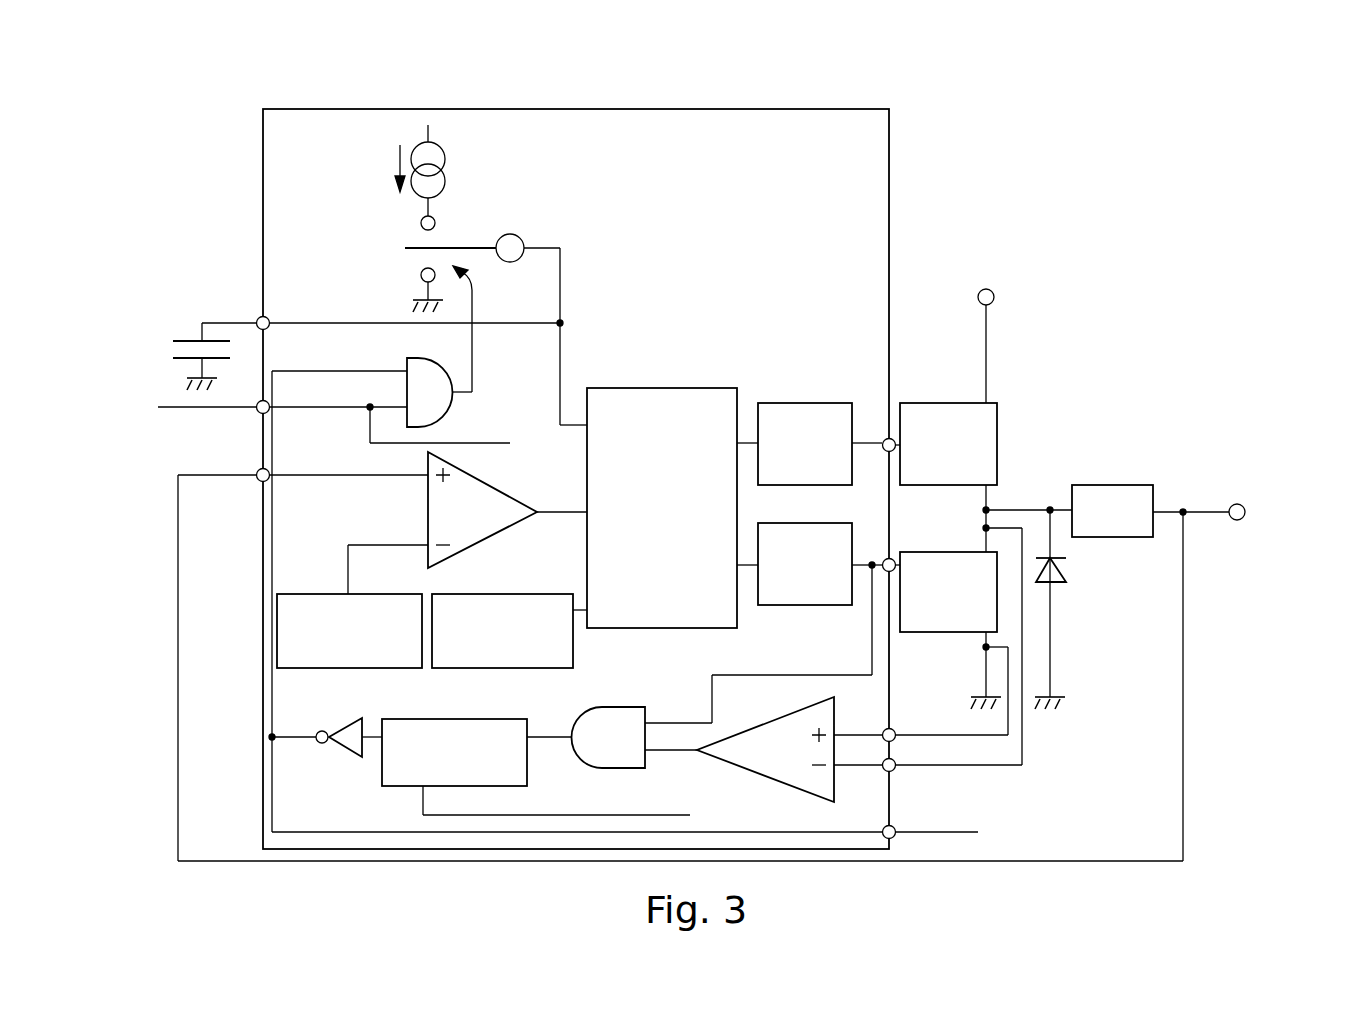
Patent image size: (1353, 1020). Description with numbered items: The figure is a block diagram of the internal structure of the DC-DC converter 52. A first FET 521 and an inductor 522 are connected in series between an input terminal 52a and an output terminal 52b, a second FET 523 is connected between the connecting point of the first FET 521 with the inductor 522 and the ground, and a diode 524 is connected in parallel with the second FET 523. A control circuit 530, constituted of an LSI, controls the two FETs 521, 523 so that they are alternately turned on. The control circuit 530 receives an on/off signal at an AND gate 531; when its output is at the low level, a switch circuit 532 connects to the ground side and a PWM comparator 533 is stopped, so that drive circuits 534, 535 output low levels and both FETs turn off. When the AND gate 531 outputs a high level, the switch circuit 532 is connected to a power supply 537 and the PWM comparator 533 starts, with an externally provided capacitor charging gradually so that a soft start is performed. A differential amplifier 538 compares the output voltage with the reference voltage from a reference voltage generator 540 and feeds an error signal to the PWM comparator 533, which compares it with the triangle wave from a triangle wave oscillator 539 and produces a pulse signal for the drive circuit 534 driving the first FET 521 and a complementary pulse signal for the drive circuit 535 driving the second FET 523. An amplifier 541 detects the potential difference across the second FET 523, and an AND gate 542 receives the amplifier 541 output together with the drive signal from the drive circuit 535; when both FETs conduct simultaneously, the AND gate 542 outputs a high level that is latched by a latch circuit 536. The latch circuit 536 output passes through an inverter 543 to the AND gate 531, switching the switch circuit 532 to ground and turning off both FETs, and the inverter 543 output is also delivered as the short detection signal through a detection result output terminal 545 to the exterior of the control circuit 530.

The DC-DC converter 52 is at (918, 98).
The control circuit 530 is at (544, 108).
The power supply 537 is at (446, 159).
The switch circuit 532 is at (463, 228).
The AND gate 531 is at (408, 362).
The PWM comparator 533 is at (660, 388).
The drive circuit 534 is at (808, 403).
The drive circuit 535 is at (808, 605).
The first FET 521 is at (950, 403).
The second FET 523 is at (949, 635).
The inductor 522 is at (1114, 485).
The diode 524 is at (1068, 573).
The differential amplifier 538 is at (528, 505).
The triangle wave oscillator 539 is at (532, 594).
The reference voltage generator 540 is at (315, 594).
The amplifier 541 is at (768, 780).
The AND gate 542 is at (619, 707).
The latch circuit 536 is at (459, 719).
The inverter 543 is at (343, 748).
The detection result output terminal 545 is at (884, 827).
The input terminal 52a is at (995, 297).
The output terminal 52b is at (1245, 512).